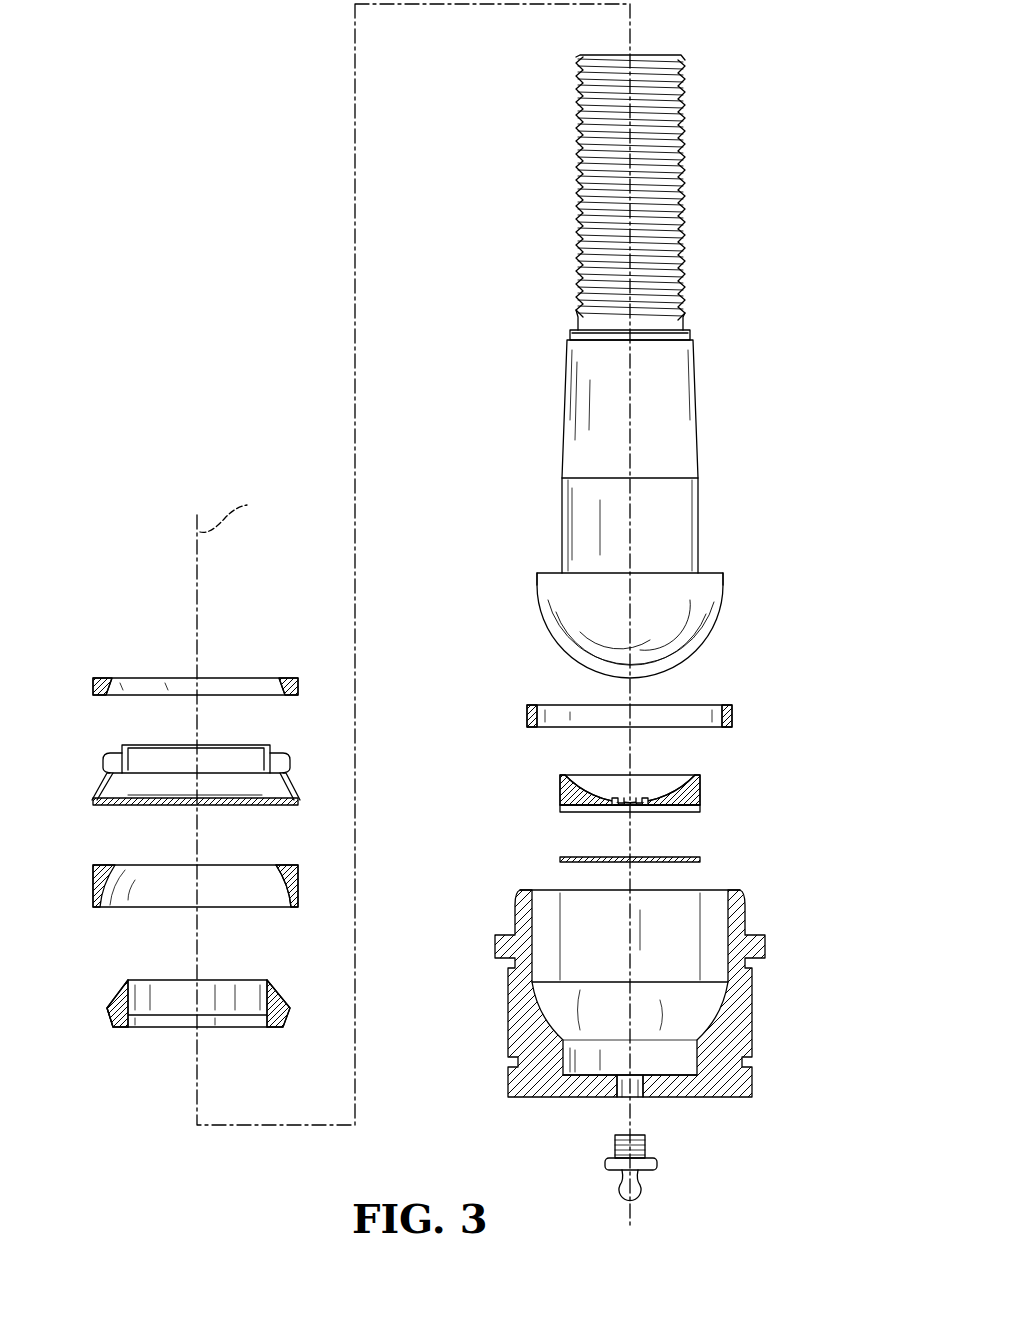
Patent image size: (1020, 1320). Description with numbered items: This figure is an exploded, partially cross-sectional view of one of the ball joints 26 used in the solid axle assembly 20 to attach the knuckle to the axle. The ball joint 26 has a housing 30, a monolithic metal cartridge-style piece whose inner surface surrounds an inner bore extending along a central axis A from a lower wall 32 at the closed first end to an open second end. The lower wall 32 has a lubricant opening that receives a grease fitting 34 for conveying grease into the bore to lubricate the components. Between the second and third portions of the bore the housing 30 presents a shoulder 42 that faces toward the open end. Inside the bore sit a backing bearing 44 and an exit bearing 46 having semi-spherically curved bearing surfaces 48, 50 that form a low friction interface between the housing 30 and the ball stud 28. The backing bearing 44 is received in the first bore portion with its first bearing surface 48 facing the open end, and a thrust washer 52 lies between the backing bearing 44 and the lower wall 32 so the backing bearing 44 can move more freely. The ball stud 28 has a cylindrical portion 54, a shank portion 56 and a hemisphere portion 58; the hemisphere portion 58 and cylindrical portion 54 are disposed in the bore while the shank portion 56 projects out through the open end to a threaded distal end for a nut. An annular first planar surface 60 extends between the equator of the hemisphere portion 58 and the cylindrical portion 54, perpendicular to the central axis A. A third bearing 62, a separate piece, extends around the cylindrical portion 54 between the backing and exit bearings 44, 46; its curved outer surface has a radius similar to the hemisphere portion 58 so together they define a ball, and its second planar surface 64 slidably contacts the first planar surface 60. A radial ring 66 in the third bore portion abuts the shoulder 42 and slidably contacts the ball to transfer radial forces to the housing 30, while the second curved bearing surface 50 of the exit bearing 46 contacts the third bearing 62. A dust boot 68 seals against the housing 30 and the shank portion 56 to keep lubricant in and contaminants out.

The solid axle assembly 20 is at (237, 314).
The ball joint 26 is at (857, 1218).
The ball stud 28 is at (692, 357).
The housing 30 is at (572, 1022).
The lower wall 32 is at (575, 1090).
The grease fitting 34 is at (640, 1178).
The shoulder 42 is at (507, 1036).
The backing bearing 44 is at (604, 804).
The exit bearing 46 is at (92, 903).
The first bearing surface 48 is at (688, 782).
The second curved bearing surface 50 is at (280, 880).
The thrust washer 52 is at (583, 812).
The cylindrical portion 54 is at (670, 566).
The shank portion 56 is at (592, 412).
The hemisphere portion 58 is at (686, 625).
The first planar surface 60 is at (545, 575).
The third bearing 62 is at (104, 1000).
The second planar surface 64 is at (110, 1026).
The radial ring 66 is at (732, 714).
The dust boot 68 is at (92, 759).
The central axis A is at (232, 515).